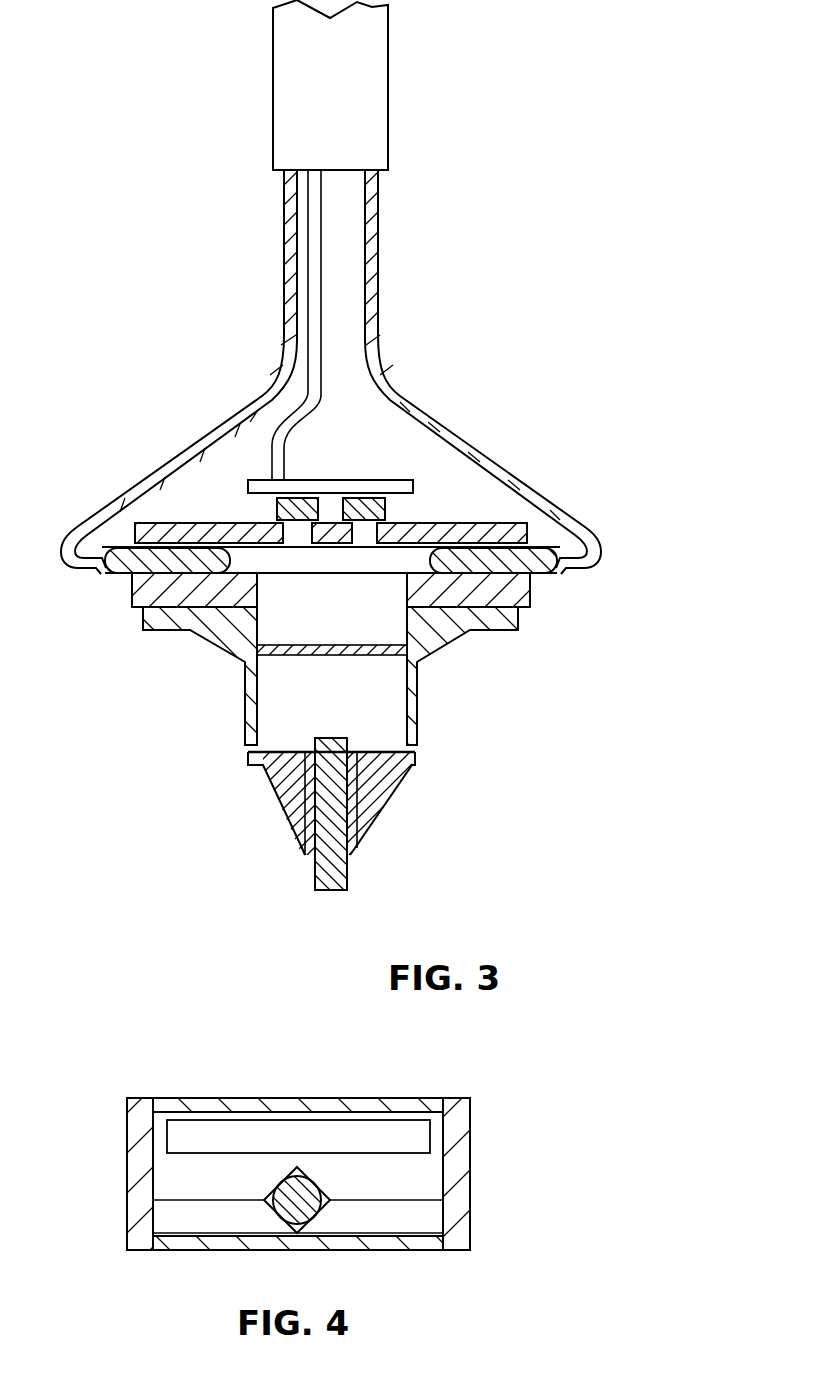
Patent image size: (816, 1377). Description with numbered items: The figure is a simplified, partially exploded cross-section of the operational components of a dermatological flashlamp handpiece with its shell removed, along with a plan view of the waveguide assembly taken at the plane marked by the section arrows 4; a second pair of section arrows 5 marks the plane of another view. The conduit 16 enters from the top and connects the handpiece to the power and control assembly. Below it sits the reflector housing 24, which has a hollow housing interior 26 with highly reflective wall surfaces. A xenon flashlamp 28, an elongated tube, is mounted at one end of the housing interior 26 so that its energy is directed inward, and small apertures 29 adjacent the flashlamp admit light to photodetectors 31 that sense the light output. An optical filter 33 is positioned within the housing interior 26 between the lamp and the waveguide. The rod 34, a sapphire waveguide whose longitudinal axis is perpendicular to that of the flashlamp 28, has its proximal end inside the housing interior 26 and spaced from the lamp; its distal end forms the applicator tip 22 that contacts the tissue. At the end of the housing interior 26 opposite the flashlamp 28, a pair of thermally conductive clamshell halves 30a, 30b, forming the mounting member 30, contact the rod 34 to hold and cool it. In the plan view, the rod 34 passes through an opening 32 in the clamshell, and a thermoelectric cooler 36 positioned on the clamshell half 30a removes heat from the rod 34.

In FIG. 3, the conduit 16 is at (385, 118).
In FIG. 3, the applicator tip 22 is at (333, 890).
In FIG. 3, the reflector housing 24 is at (453, 633).
In FIG. 3, the housing interior 26 is at (417, 697).
In FIG. 3, the xenon flashlamp 28 is at (248, 563).
In FIG. 3, the apertures 29 is at (305, 527).
In FIG. 4, the clamshell halves 30 is at (433, 1213).
In FIG. 3, the clamshell half 30a is at (288, 798).
In FIG. 4, the clamshell half 30a is at (165, 1178).
In FIG. 4, the clamshell half 30b is at (165, 1227).
In FIG. 3, the photodetectors 31 is at (276, 508).
In FIG. 4, the aperture 32 is at (275, 1203).
In FIG. 3, the optical filter 33 is at (337, 650).
In FIG. 3, the rod 34 is at (348, 868).
In FIG. 4, the rod 34 is at (307, 1203).
In FIG. 3, the thermoelectric cooler 36 is at (293, 757).
In FIG. 4, the thermoelectric cooler 36 is at (342, 1132).
In FIG. 3, the section line 4- 4 is at (187, 724).
In FIG. 3, the section line 5- 5 is at (332, 290).